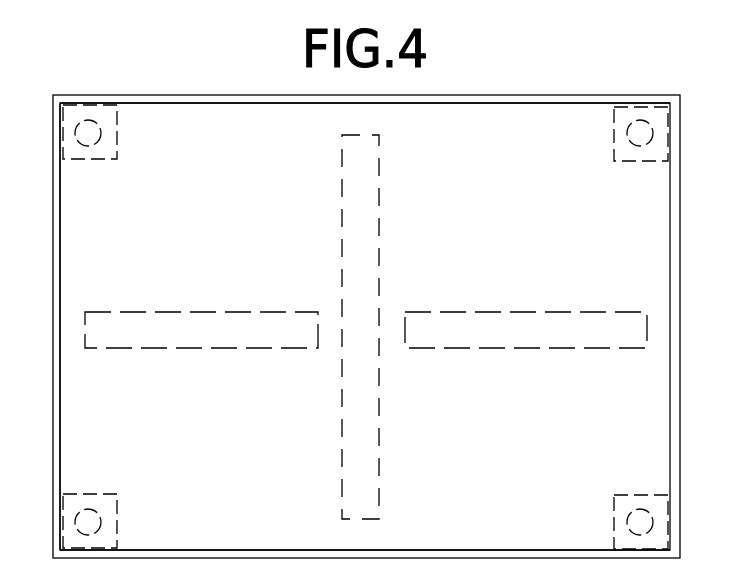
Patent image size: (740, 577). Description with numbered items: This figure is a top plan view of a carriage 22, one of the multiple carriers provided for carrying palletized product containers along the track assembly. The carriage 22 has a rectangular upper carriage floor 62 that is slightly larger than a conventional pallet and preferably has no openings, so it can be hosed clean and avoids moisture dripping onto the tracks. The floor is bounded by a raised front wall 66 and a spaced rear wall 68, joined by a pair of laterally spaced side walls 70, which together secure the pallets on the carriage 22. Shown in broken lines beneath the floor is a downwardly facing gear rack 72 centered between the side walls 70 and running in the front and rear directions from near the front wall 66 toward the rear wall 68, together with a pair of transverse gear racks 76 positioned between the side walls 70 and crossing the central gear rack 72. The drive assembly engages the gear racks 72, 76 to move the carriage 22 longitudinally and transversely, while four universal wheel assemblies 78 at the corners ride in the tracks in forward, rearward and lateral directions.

The front wall 66 is at (455, 94).
The side walls 70 is at (62, 273).
The rear wall 68 is at (493, 550).
The upper carriage floor 62 is at (578, 241).
The carriage 22 is at (240, 452).
The gear rack 72 is at (380, 213).
The transverse gear racks 76 is at (205, 312).
The universal wheel assemblies 78 is at (108, 140).